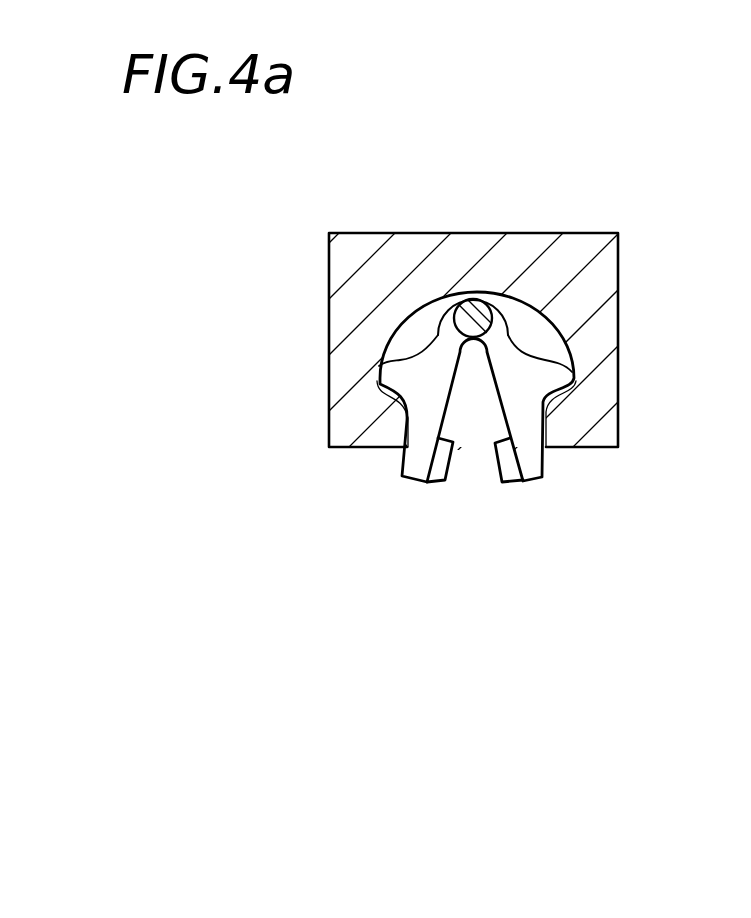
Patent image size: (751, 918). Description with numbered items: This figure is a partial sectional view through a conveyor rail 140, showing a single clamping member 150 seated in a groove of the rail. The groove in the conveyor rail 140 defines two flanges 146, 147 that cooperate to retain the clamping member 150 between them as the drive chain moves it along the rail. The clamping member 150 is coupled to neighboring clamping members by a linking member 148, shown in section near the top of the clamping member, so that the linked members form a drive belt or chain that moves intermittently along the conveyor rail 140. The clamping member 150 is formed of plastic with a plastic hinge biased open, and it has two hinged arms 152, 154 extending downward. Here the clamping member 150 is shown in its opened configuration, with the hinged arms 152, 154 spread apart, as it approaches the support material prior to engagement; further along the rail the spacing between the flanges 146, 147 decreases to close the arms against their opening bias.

The first conveyor rail 140 is at (300, 314).
The flange 146 is at (348, 433).
The flange 147 is at (598, 422).
The linking member 148 is at (477, 298).
The clamping member 150 is at (525, 306).
The hinged arm 152 is at (408, 460).
The hinged arm 154 is at (540, 462).